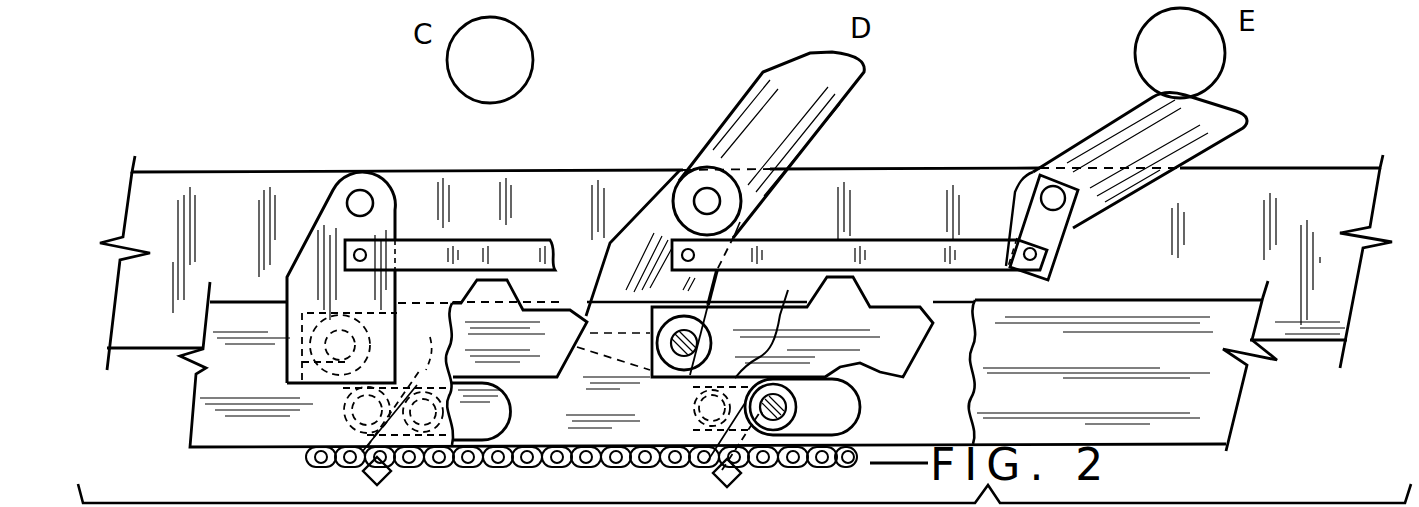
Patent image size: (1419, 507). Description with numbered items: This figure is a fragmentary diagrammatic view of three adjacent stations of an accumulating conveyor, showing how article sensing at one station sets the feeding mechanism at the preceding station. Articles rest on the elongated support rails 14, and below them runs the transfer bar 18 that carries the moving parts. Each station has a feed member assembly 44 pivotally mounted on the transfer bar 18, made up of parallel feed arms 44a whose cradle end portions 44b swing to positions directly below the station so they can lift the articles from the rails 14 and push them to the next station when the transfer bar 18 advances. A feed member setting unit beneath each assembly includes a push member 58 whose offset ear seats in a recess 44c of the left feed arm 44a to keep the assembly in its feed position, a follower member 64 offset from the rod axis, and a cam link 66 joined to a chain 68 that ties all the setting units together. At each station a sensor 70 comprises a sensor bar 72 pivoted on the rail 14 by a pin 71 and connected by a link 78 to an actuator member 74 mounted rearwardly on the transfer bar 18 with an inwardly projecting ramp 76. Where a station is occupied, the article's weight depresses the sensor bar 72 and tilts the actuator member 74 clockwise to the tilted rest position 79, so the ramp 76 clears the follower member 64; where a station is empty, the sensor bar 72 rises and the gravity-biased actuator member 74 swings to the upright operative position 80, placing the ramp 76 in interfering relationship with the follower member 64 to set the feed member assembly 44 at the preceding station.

The support rails 14 is at (238, 183).
The transfer bar 18 is at (190, 430).
The feed member assembly 44 is at (535, 384).
The feed arm 44a is at (540, 320).
The cradle end portion 44b is at (892, 306).
The recess 44c is at (721, 283).
The push member 58 is at (862, 416).
The follower member 64 is at (345, 415).
The cam link 66 is at (742, 478).
The chain 68 is at (603, 468).
The sensor 70 is at (726, 106).
The pin 71 is at (790, 163).
The sensor bar 72 is at (828, 122).
The actuator member 74 is at (320, 198).
The ramp 76 is at (302, 362).
The link 78 is at (512, 241).
The tilted rest position 79 is at (772, 277).
The operative position 80 is at (401, 288).